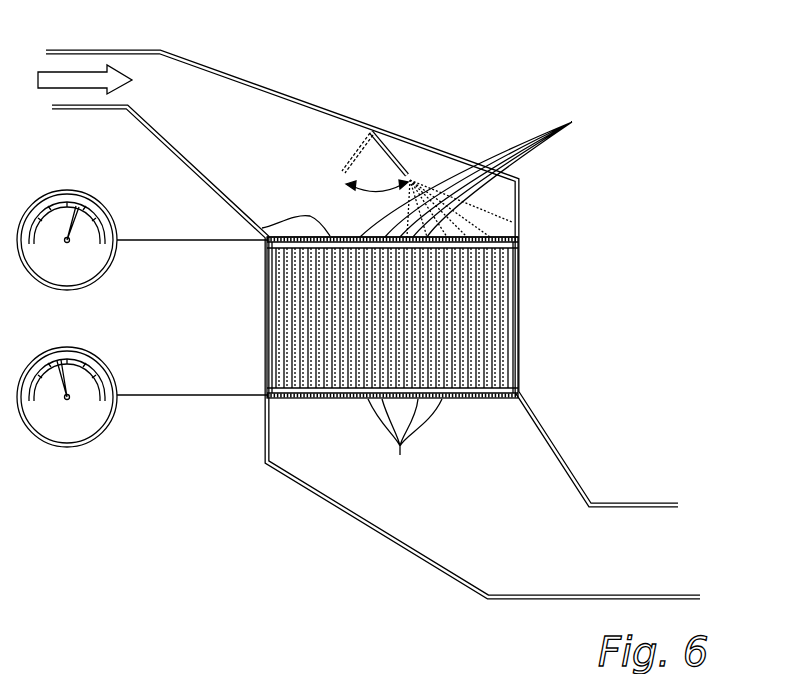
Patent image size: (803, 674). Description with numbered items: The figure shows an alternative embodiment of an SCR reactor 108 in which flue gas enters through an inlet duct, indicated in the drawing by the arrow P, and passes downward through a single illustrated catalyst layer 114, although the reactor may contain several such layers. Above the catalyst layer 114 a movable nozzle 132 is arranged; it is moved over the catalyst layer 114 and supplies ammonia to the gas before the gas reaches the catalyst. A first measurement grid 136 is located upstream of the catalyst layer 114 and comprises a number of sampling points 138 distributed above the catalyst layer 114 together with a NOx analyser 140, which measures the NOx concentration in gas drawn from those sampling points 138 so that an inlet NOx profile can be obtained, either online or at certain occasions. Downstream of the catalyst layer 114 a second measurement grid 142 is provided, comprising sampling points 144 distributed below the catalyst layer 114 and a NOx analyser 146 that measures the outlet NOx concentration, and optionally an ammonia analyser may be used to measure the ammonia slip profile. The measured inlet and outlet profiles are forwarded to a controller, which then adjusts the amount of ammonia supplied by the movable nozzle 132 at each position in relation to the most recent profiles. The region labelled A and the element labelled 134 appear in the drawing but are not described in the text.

The SCR reactor 108 is at (532, 309).
The catalyst layer 114 is at (505, 358).
The movable nozzle 132 is at (402, 157).
The filter inlet screen 134 is at (465, 237).
The first measurement grid 136 is at (341, 231).
The sampling points 138 is at (486, 165).
The NOx analyser 140 is at (113, 262).
The second measurement grid 142 is at (335, 407).
The sampling points 144 is at (405, 445).
The NOx analyser 146 is at (105, 432).
The process gas flow P is at (73, 80).
The region A is at (262, 228).